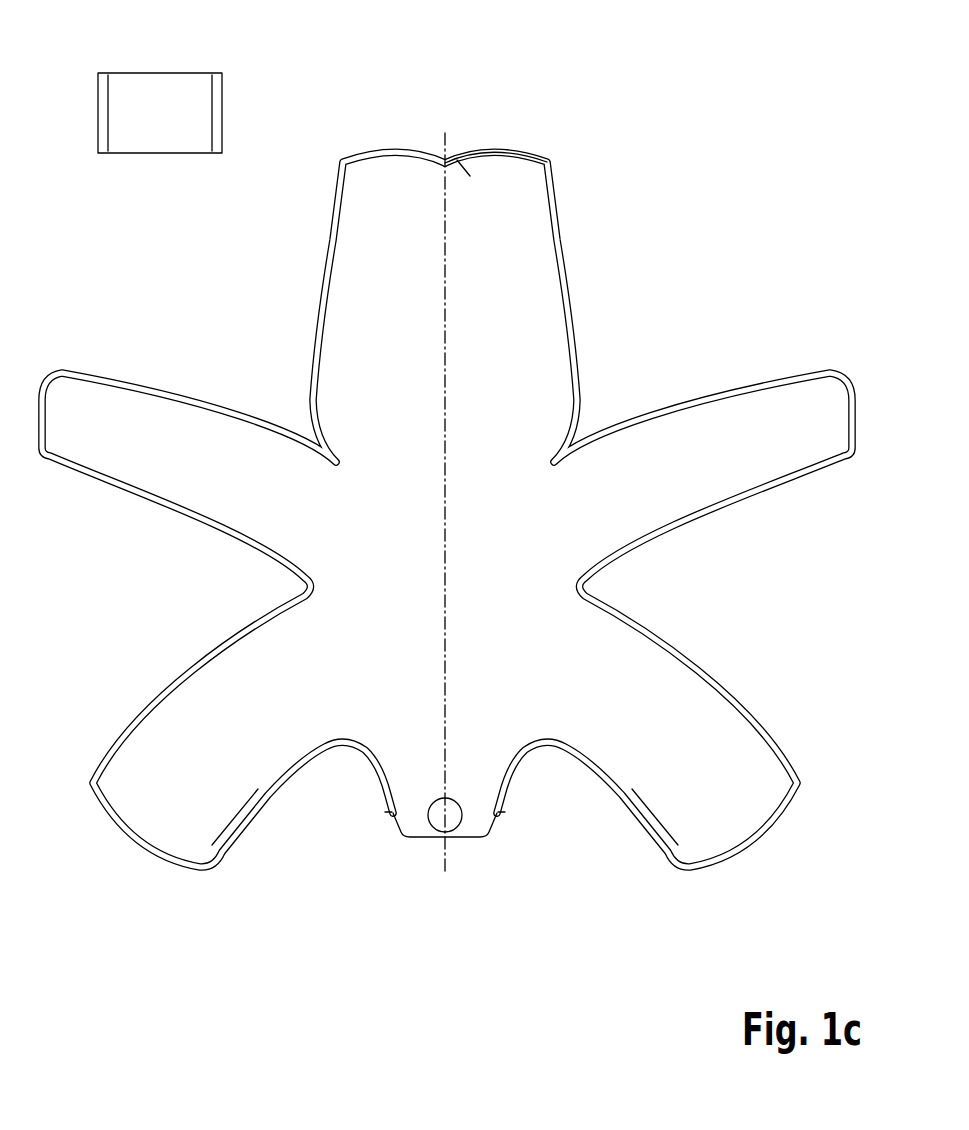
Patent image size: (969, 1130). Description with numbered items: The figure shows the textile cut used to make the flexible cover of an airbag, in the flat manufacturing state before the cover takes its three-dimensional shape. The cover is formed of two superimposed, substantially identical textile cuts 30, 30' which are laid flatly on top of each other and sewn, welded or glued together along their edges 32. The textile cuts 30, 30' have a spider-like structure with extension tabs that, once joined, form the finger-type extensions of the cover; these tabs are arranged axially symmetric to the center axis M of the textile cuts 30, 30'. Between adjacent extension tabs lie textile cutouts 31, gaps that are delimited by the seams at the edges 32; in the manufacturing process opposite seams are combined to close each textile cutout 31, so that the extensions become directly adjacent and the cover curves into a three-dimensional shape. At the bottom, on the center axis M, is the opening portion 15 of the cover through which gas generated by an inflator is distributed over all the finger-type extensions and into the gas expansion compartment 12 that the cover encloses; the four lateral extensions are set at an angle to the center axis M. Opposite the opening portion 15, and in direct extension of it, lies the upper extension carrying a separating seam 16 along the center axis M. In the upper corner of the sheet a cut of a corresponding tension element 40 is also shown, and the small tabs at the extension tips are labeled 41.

The gas expansion compartment 12 is at (199, 800).
The opening portion 15 is at (417, 838).
The separating seam 16 is at (447, 491).
The textile cut 30 is at (496, 125).
The textile cut 30' is at (466, 132).
The textile cutout 31 is at (204, 303).
The edge 32 is at (328, 237).
The tension element 40 is at (158, 98).
The mounting tab 41 is at (395, 178).
The center axis M is at (445, 852).